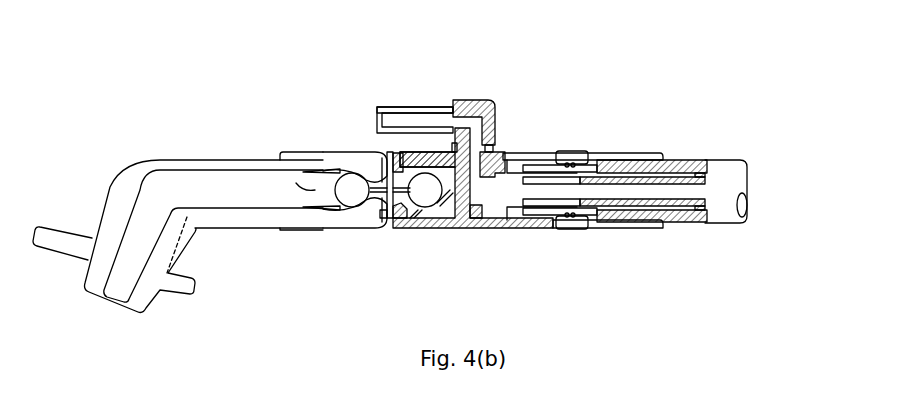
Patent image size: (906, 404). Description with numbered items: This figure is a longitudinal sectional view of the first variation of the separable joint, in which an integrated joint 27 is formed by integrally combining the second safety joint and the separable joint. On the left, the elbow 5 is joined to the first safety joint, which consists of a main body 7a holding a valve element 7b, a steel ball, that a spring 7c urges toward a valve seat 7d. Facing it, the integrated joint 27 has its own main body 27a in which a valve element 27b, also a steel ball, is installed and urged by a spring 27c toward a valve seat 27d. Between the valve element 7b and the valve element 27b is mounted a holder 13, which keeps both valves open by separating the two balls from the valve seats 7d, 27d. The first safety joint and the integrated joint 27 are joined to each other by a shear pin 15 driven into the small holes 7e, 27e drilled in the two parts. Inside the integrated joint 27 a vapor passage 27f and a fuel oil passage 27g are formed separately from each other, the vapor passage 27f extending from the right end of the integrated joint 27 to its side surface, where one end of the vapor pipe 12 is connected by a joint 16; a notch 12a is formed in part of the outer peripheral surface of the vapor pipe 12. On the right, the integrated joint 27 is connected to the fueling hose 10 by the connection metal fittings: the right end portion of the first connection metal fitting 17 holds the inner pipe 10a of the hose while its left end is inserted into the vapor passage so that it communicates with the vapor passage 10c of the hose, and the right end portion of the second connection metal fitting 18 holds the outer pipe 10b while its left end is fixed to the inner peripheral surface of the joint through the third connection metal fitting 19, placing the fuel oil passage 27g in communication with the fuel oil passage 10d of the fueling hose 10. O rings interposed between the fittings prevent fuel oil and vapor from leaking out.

The elbow 5 is at (160, 158).
The main body 7a is at (337, 153).
The valve element 7b is at (333, 226).
The spring 7c is at (296, 186).
The valve seat 7d is at (355, 152).
The small hole 7e is at (377, 152).
The fueling hose 10 is at (723, 162).
The inner pipe 10a is at (687, 208).
The outer pipe 10b is at (682, 158).
The vapor passage 10c is at (695, 190).
The fuel oil passage 10d is at (680, 208).
The vapor pipe 12 is at (393, 107).
The notch 12a is at (417, 105).
The holder 13 is at (365, 218).
The shear pin 15 is at (397, 152).
The joint 16 is at (473, 100).
The first connection metal fitting 17 is at (517, 228).
The second connection metal fitting 18 is at (640, 224).
The third connection metal fitting 19 is at (575, 232).
The integrated joint 27 is at (488, 228).
The main body 27a is at (427, 152).
The valve element 27b is at (414, 222).
The spring 27c is at (437, 222).
The valve seat 27d is at (400, 222).
The small hole 27e is at (378, 215).
The vapor passage 27f is at (508, 152).
The fuel oil passage 27g is at (463, 220).